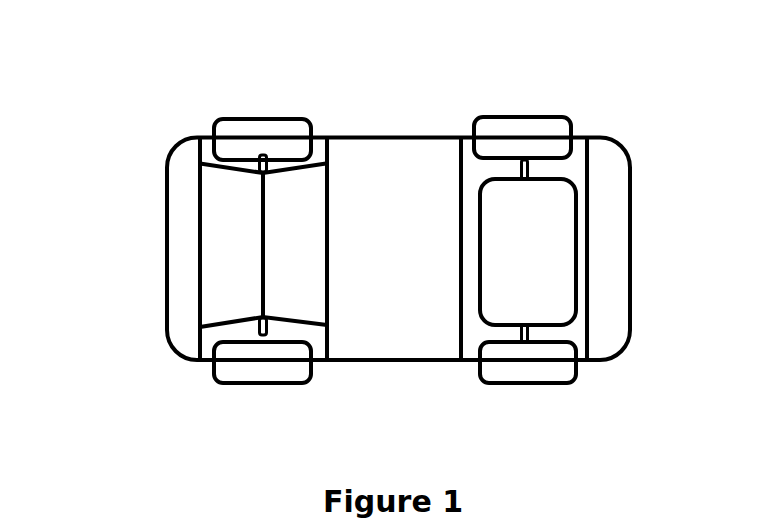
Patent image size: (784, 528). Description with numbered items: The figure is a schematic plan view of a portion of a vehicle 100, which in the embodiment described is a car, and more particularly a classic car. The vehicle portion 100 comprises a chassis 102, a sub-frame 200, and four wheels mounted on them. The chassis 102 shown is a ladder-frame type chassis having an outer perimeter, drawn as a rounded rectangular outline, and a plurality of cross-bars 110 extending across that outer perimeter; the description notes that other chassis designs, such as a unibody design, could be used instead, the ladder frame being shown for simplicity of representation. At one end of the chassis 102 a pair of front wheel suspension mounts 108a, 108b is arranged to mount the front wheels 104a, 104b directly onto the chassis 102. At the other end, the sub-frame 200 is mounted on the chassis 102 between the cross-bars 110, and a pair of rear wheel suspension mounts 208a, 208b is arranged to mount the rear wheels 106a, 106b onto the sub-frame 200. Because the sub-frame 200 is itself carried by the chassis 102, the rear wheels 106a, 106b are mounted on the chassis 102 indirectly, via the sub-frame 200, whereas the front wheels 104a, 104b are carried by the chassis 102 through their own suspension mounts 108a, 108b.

The vehicle 100 is at (656, 92).
The chassis 102 is at (170, 157).
The front wheel 104a is at (227, 128).
The front wheel 104b is at (255, 378).
The rear wheel 106a is at (528, 115).
The rear wheel 106b is at (538, 388).
The front wheel suspension mount 108a is at (243, 170).
The front wheel suspension mount 108b is at (260, 326).
The cross-bars 110 is at (590, 226).
The sub-frame 200 is at (546, 244).
The rear wheel suspension mount 208a is at (530, 166).
The rear wheel suspension mount 208b is at (530, 332).